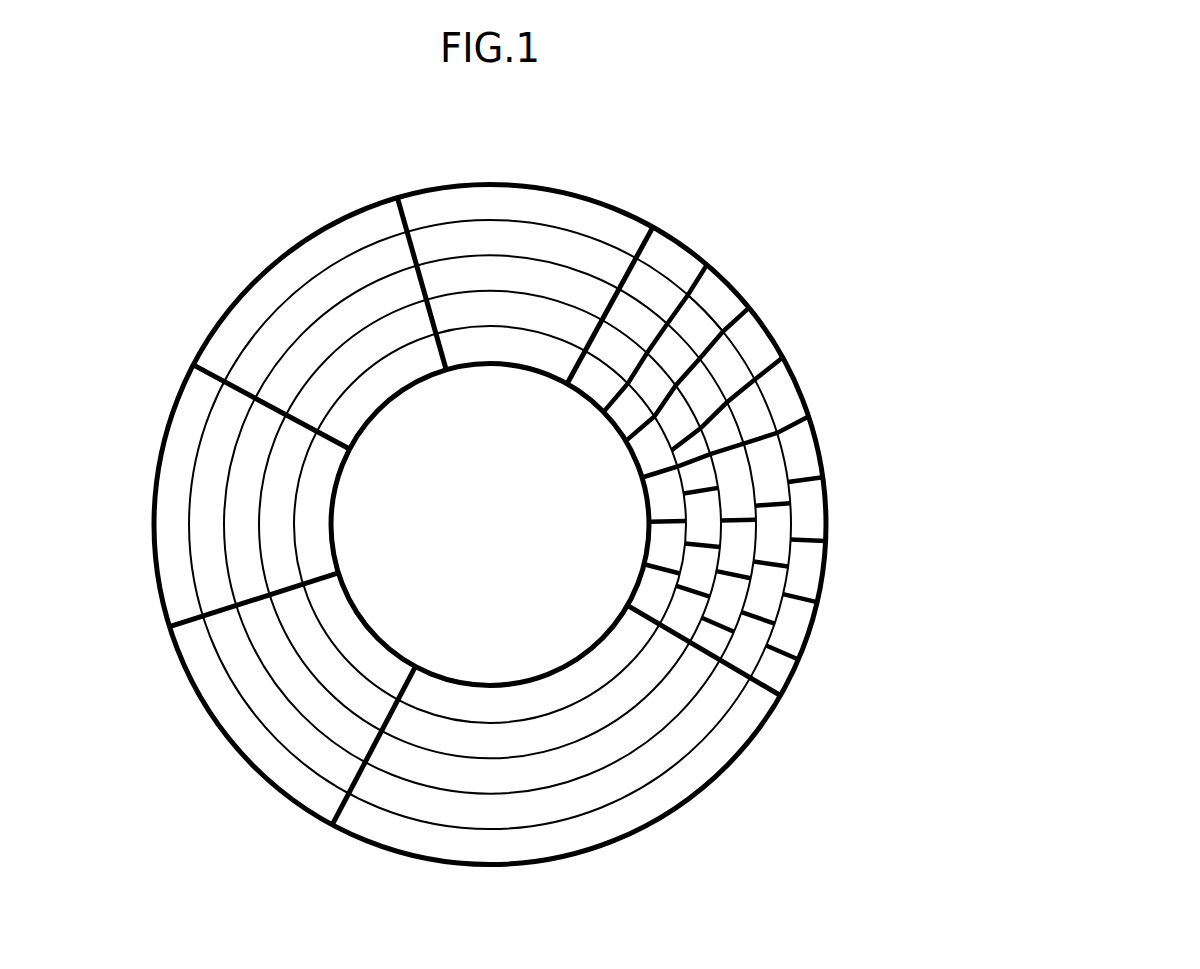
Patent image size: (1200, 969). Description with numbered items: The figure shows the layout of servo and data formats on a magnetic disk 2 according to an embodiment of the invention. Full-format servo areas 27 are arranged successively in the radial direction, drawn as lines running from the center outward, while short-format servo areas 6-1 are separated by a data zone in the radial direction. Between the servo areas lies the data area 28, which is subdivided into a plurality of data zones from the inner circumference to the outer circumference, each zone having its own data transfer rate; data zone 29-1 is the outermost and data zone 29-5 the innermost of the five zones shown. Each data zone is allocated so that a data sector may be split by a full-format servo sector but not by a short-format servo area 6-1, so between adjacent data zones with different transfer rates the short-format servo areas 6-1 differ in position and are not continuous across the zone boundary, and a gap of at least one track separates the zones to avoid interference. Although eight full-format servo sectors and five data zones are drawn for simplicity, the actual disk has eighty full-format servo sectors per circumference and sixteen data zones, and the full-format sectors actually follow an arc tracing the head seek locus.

The magnetic disk 2 is at (303, 238).
The full-format servo area 27 is at (653, 223).
The short-format servo area 6-1 is at (707, 262).
The data area 28 is at (723, 303).
The data zone 1 29-1 is at (777, 430).
The data zone 5 29-5 is at (662, 460).